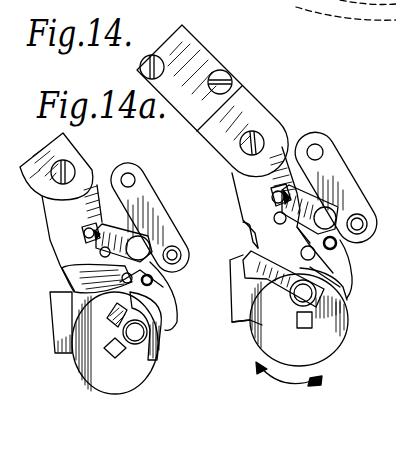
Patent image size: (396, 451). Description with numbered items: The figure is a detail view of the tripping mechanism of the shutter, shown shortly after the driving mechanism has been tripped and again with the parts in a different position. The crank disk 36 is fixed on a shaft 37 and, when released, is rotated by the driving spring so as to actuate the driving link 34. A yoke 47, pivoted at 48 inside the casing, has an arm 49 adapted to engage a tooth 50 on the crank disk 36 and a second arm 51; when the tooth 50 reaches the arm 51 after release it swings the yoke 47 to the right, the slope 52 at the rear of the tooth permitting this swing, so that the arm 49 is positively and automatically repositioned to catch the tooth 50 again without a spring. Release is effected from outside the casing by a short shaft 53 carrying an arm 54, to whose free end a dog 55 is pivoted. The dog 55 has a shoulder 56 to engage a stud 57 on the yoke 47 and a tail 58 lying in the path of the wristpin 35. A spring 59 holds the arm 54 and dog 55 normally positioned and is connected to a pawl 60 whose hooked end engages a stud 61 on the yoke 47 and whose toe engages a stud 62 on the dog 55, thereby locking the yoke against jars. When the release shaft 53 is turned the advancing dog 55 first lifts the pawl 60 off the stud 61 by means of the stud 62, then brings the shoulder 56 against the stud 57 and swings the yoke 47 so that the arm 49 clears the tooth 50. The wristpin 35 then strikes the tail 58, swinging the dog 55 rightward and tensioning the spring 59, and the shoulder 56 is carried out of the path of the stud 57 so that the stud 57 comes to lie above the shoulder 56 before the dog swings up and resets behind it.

In FIG. 14A, the driving link 34 is at (255, 253).
In FIG. 14, the wristpin 35 is at (137, 345).
In FIG. 14A, the wristpin 35 is at (300, 294).
In FIG. 14, the crank disk 36 is at (100, 385).
In FIG. 14A, the crank disk 36 is at (325, 340).
In FIG. 14, the shaft 37 is at (110, 350).
In FIG. 14A, the shaft 37 is at (316, 357).
In FIG. 14, the yoke 47 is at (52, 215).
In FIG. 14A, the yoke 47 is at (238, 180).
In FIG. 14, the pivot 48 is at (70, 167).
In FIG. 14A, the pivot 48 is at (259, 137).
In FIG. 14A, the arm 49 is at (242, 303).
In FIG. 14A, the tooth 50 is at (263, 287).
In FIG. 14, the arm 51 is at (176, 325).
In FIG. 14A, the arm 51 is at (350, 294).
In FIG. 14, the slope 52 is at (72, 332).
In FIG. 14A, the slope 52 is at (262, 340).
In FIG. 14, the short shaft 53 is at (133, 177).
In FIG. 14A, the short shaft 53 is at (320, 150).
In FIG. 14, the arm 54 is at (155, 217).
In FIG. 14A, the arm 54 is at (357, 193).
In FIG. 14, the dog 55 is at (175, 266).
In FIG. 14A, the dog 55 is at (367, 237).
In FIG. 14A, the shoulder 56 is at (348, 264).
In FIG. 14, the stud 57 is at (52, 292).
In FIG. 14A, the stud 57 is at (251, 228).
In FIG. 14, the tail 58 is at (153, 343).
In FIG. 14A, the tail 58 is at (313, 318).
In FIG. 14, the spring 59 is at (98, 230).
In FIG. 14A, the spring 59 is at (297, 190).
In FIG. 14, the pawl 60 is at (122, 232).
In FIG. 14A, the pawl 60 is at (315, 205).
In FIG. 14, the stud 61 is at (100, 254).
In FIG. 14A, the stud 61 is at (278, 216).
In FIG. 14, the stud 62 is at (152, 283).
In FIG. 14A, the stud 62 is at (336, 245).